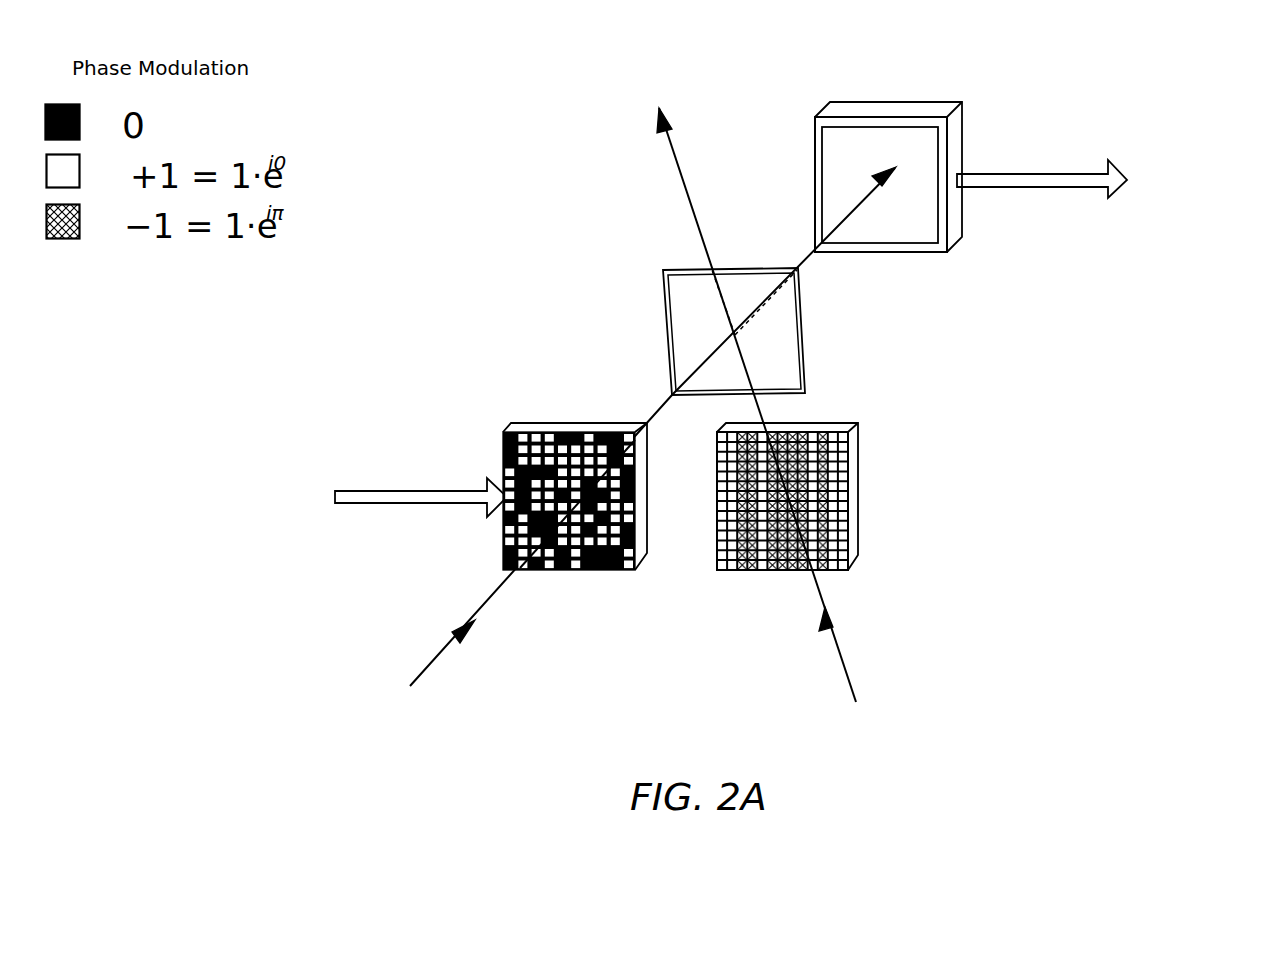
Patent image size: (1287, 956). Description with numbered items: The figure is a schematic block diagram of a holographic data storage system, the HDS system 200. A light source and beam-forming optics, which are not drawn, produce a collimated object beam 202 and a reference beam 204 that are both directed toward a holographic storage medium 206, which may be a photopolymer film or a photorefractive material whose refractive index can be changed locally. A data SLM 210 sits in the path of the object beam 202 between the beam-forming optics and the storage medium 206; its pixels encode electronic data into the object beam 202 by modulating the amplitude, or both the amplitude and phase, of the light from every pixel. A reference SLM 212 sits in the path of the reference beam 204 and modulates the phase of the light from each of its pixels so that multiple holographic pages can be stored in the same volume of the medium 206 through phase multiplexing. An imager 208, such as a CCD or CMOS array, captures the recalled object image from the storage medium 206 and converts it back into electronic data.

The HDS system 200 is at (522, 238).
The object beam 202 is at (418, 680).
The reference beam 204 is at (853, 686).
The holographic storage medium 206 is at (808, 326).
The imager 208 is at (896, 102).
The data spatial light modulator 210 is at (648, 492).
The reference SLM 212 is at (860, 492).